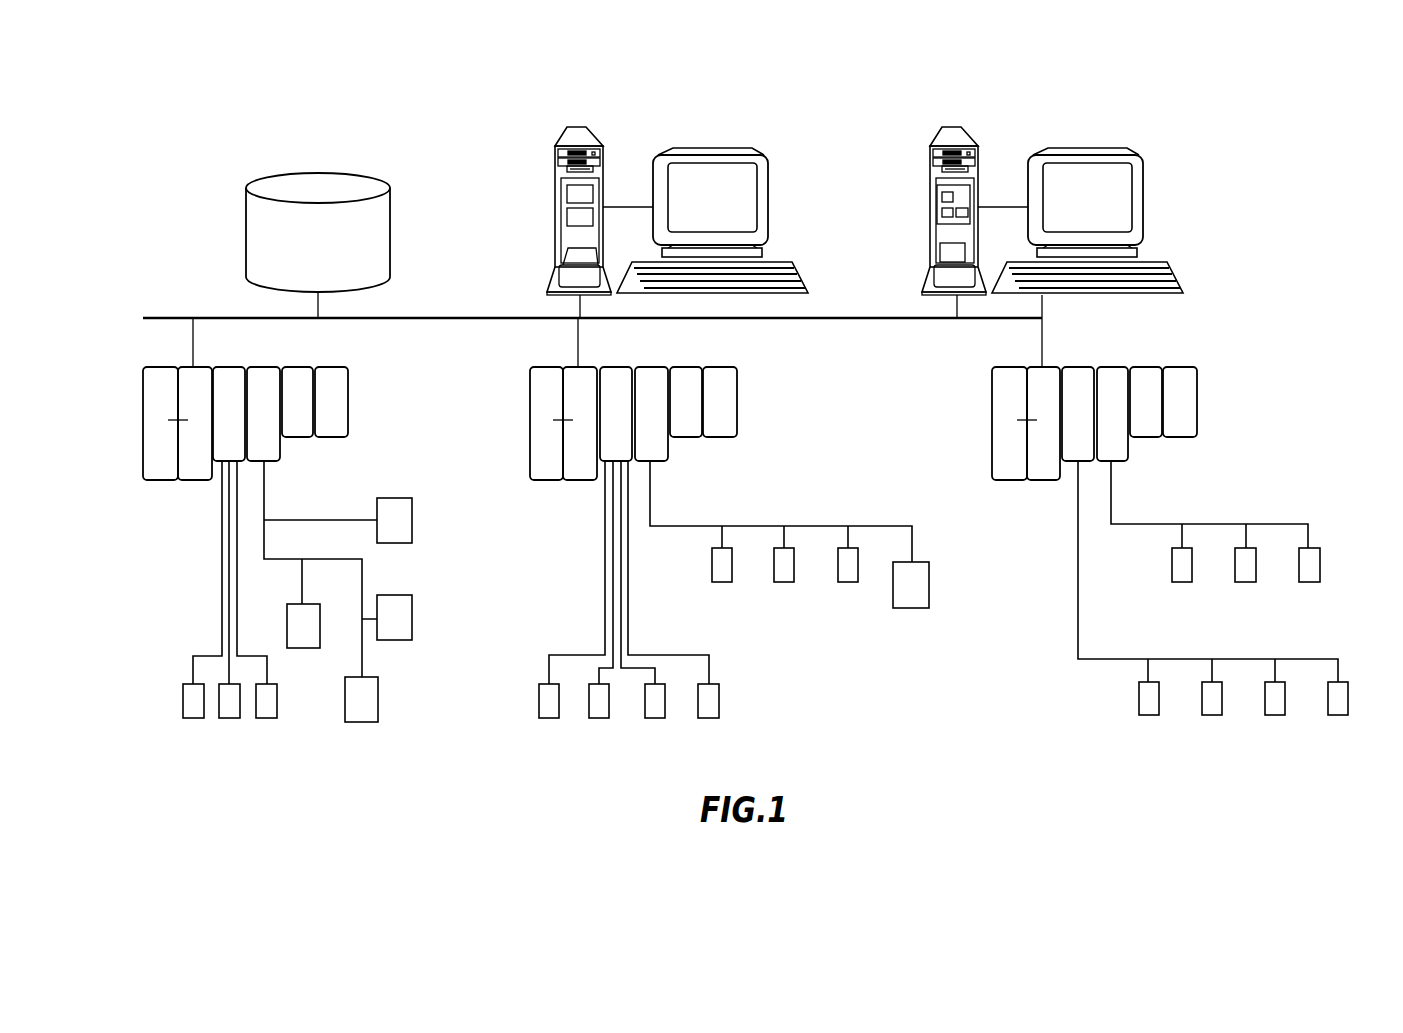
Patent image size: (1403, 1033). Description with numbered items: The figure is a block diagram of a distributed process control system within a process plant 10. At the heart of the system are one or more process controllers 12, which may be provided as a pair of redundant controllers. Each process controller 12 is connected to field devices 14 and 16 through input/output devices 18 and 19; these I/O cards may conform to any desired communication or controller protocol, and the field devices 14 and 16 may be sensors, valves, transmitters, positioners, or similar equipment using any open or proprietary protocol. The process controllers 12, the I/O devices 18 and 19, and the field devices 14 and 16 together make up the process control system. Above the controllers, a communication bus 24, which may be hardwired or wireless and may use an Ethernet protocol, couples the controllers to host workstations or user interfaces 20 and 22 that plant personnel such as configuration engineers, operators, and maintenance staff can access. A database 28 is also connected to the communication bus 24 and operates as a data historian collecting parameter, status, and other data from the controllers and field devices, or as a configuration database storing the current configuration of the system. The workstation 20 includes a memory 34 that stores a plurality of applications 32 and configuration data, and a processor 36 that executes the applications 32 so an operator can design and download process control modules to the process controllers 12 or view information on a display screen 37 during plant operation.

The process plant 10 is at (281, 73).
The process controller 12 is at (190, 377).
The field device 14 is at (190, 718).
The field device 16 is at (412, 520).
The input/output device 18 is at (230, 385).
The input/output device 19 is at (260, 382).
The workstation 20 is at (957, 194).
The user interface 22 is at (578, 127).
The communication bus 24 is at (448, 317).
The database 28 is at (390, 212).
The applications 32 is at (942, 212).
The memory 34 is at (940, 224).
The processor 36 is at (940, 255).
The display screen 37 is at (1143, 183).